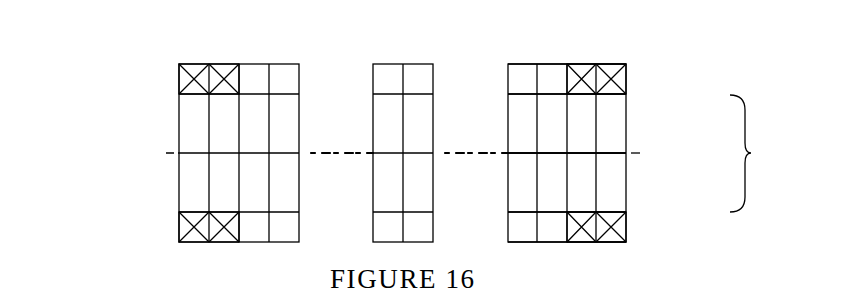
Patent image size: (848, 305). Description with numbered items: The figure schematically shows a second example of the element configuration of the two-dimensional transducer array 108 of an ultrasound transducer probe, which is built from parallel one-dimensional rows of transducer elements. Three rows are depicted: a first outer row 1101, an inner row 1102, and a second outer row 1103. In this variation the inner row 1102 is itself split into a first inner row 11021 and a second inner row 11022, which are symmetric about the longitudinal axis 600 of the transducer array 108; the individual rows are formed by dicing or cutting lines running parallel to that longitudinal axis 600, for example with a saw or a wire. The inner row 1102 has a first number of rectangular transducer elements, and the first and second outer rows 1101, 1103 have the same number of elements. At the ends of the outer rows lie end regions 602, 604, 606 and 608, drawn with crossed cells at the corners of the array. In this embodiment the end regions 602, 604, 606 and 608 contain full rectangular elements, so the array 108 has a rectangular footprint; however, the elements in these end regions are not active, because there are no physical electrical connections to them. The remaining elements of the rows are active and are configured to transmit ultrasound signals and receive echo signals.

The two-dimensional transducer array 108 is at (93, 72).
The longitudinal axis 600 is at (169, 154).
The end region 602 is at (202, 42).
The end region 604 is at (202, 264).
The end region 606 is at (603, 42).
The end region 608 is at (603, 264).
The first outer row 1101 is at (657, 78).
The first inner row 11021 is at (657, 124).
The second inner row 11022 is at (657, 182).
The second outer row 1103 is at (657, 227).
The inner row 1102 is at (735, 94).